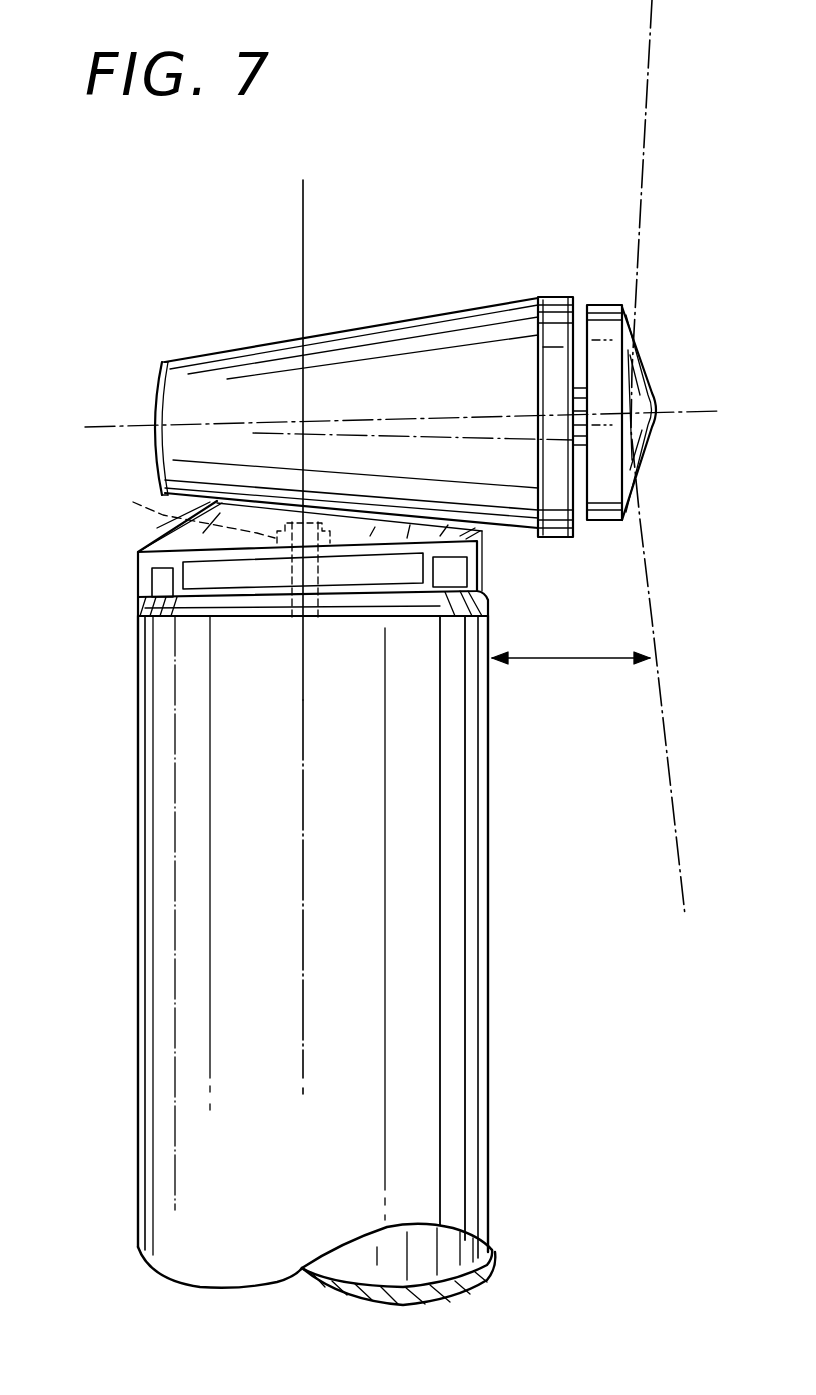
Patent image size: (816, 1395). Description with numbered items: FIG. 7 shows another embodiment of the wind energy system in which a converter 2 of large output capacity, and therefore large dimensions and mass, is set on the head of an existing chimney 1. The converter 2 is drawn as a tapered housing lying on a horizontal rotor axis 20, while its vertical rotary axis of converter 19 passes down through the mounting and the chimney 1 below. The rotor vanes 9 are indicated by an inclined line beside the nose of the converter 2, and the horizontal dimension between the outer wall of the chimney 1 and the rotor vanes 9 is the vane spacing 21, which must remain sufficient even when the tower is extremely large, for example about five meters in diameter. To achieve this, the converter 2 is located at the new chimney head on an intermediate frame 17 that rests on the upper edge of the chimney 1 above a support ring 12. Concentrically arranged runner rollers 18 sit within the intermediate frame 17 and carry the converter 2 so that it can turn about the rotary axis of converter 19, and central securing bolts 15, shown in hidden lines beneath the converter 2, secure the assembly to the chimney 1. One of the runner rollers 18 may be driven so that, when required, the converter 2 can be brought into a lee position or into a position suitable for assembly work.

The chimney 1 is at (240, 637).
The converter 2 is at (238, 374).
The rotor vanes 9 is at (637, 224).
The support ring 12 is at (137, 622).
The securing bolts 15 is at (212, 516).
The intermediate frame 17 is at (140, 556).
The runner rollers 18 is at (140, 584).
The rotary axis of converter 19 is at (303, 272).
The rotor axis 20 is at (126, 426).
The vane spacing 21 is at (598, 655).